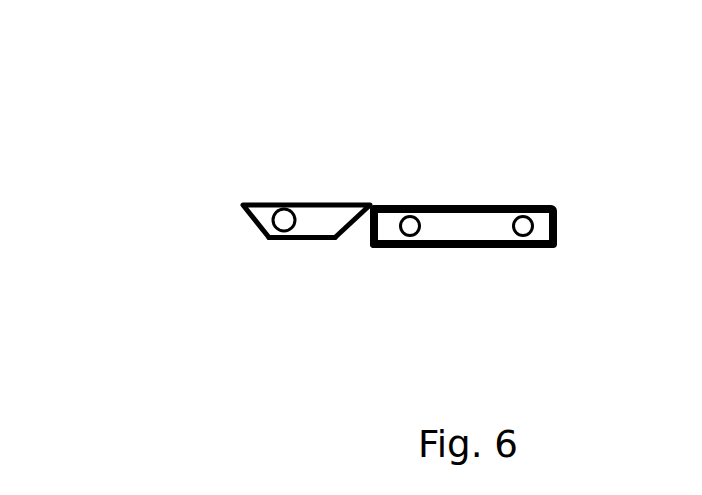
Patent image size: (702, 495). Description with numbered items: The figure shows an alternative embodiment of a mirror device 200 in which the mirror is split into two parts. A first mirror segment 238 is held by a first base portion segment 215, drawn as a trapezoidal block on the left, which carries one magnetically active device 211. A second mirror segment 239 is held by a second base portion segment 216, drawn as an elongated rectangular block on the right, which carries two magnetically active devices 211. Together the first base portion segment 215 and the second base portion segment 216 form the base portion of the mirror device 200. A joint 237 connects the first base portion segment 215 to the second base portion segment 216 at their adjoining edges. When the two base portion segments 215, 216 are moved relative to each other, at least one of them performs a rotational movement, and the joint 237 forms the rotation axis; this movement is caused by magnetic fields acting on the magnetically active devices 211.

The mirror device 200 is at (186, 116).
The magnetically active device 211 is at (280, 209).
The first base portion segment 215 is at (257, 203).
The second base portion segment 216 is at (495, 203).
The joint 237 is at (376, 205).
The first mirror segment 238 is at (303, 239).
The second mirror segment 239 is at (408, 248).